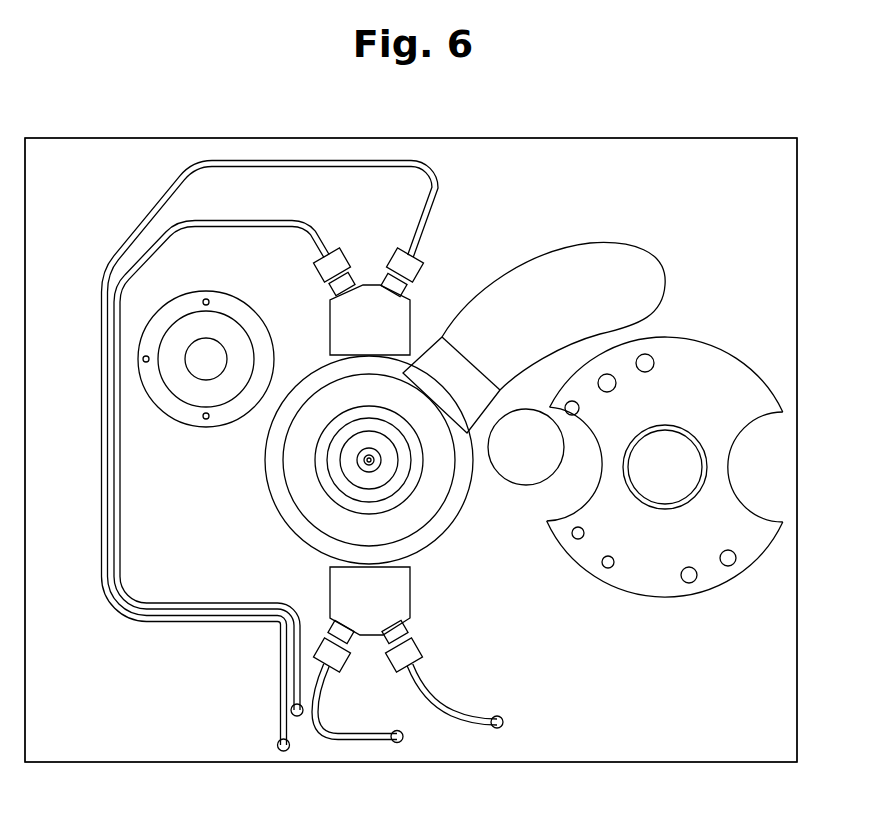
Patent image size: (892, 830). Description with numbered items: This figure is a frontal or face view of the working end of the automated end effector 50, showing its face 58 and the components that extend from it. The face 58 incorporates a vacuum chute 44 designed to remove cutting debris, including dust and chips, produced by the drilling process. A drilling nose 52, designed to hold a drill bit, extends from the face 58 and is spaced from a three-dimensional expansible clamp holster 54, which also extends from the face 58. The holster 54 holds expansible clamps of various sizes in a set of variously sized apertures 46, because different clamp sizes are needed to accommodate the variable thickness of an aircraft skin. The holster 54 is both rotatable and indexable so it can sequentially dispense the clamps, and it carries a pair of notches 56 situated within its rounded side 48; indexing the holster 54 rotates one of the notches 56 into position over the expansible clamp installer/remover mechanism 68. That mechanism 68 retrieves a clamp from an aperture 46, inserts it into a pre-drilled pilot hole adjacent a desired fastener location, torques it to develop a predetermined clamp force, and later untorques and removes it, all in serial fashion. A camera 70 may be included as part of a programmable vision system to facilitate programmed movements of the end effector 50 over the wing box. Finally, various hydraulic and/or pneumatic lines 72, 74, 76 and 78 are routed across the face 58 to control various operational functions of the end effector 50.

The vacuum chute 44 is at (565, 268).
The apertures 46 is at (654, 366).
The rounded side 48 is at (661, 597).
The end effector 50 is at (814, 191).
The drilling nose 52 is at (317, 498).
The expansible clamp holster 54 is at (722, 330).
The notches 56 is at (577, 431).
The face 58 is at (737, 197).
The expansible clamp installer/remover mechanism 68 is at (522, 470).
The camera 70 is at (228, 303).
The hydraulic and/or pneumatic line 72 is at (157, 199).
The hydraulic and/or pneumatic line 74 is at (244, 220).
The hydraulic and/or pneumatic line 76 is at (450, 705).
The hydraulic and/or pneumatic line 78 is at (363, 744).